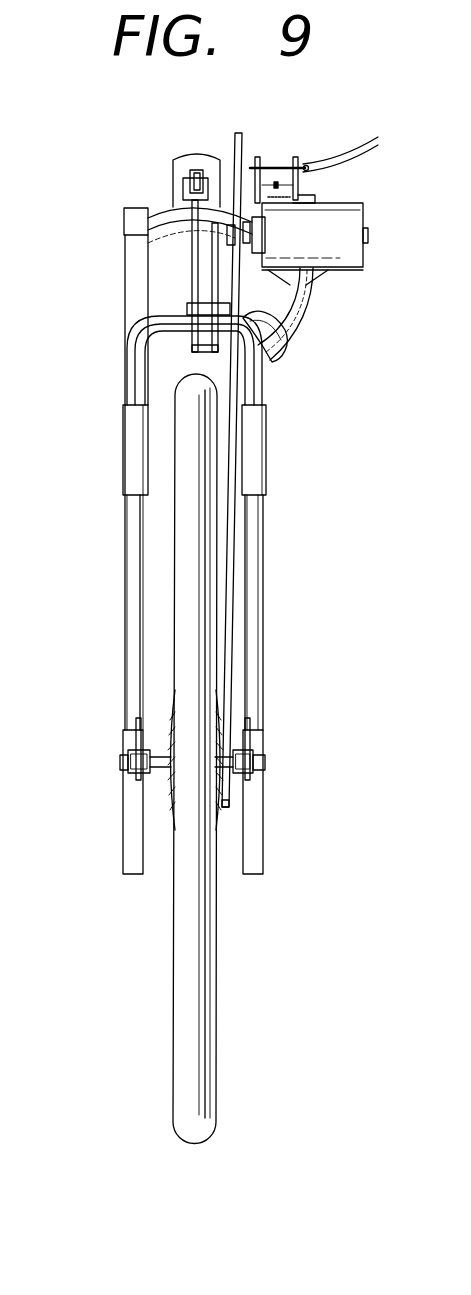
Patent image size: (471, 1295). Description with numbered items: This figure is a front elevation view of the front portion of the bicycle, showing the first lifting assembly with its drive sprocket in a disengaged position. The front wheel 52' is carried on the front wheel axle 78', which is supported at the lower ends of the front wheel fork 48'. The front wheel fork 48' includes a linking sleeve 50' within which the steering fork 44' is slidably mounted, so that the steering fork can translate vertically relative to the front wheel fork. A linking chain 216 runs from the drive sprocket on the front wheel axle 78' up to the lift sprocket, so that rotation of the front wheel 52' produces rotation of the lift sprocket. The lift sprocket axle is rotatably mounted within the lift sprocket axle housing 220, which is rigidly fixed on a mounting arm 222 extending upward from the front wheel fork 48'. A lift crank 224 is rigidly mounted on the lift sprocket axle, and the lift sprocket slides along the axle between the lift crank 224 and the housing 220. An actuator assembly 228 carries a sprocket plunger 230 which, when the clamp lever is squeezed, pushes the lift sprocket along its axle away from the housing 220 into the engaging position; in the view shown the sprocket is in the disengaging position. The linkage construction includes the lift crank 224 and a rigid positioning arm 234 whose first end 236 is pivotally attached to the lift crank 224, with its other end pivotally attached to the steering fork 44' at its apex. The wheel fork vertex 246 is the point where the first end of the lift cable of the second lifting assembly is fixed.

The actuator assembly 228 is at (284, 142).
The sprocket plunger 230 is at (255, 230).
The lift sprocket axle housing 220 is at (338, 215).
The rigid positioning arm 234 is at (165, 243).
The first end of the positioning arm 236 is at (185, 290).
The wheel fork vertex 246 is at (135, 337).
The mounting arm 222 is at (308, 290).
The lift crank 224 is at (268, 300).
The linking sleeve 50' is at (196, 450).
The front wheel fork 48' is at (151, 482).
The linking chain 216 is at (232, 600).
The front wheel axle 78' is at (197, 726).
The steering fork 44' is at (194, 802).
The front wheel 52' is at (159, 759).